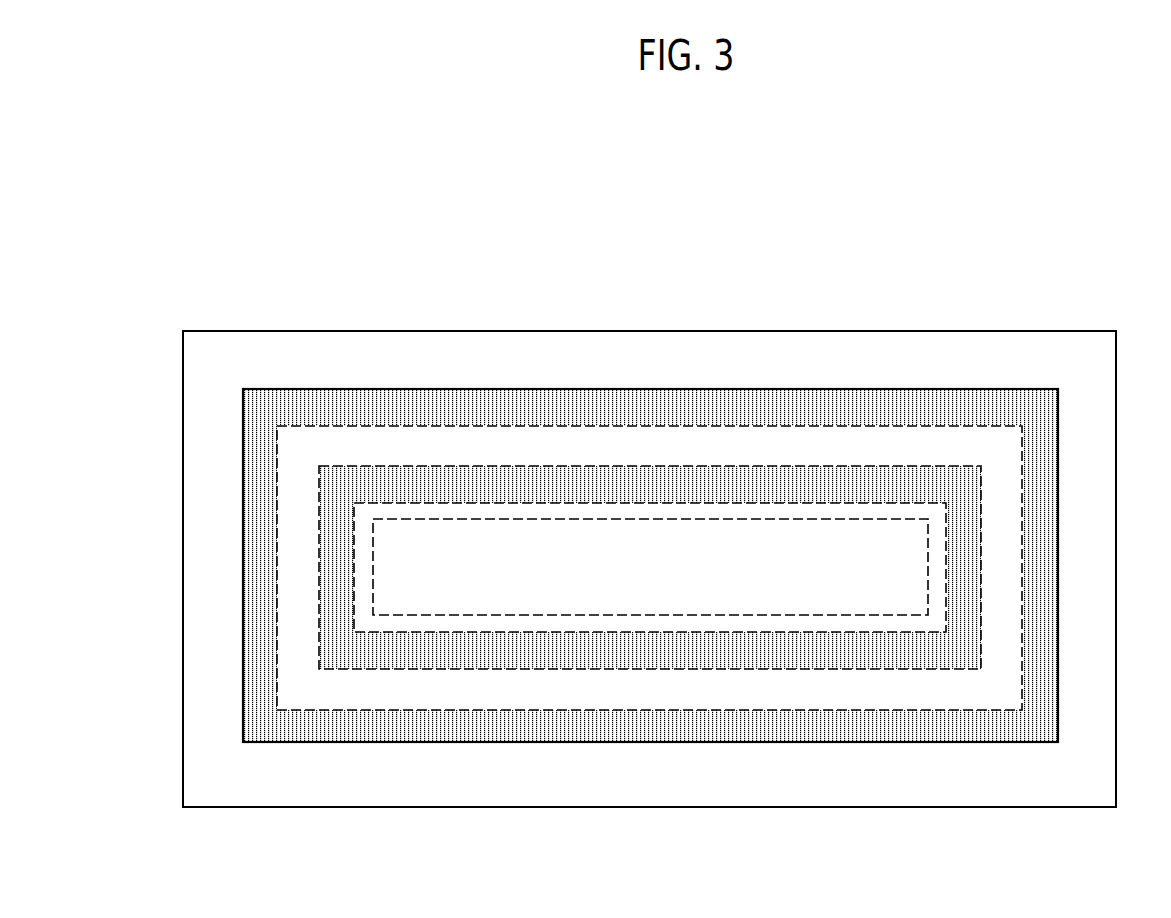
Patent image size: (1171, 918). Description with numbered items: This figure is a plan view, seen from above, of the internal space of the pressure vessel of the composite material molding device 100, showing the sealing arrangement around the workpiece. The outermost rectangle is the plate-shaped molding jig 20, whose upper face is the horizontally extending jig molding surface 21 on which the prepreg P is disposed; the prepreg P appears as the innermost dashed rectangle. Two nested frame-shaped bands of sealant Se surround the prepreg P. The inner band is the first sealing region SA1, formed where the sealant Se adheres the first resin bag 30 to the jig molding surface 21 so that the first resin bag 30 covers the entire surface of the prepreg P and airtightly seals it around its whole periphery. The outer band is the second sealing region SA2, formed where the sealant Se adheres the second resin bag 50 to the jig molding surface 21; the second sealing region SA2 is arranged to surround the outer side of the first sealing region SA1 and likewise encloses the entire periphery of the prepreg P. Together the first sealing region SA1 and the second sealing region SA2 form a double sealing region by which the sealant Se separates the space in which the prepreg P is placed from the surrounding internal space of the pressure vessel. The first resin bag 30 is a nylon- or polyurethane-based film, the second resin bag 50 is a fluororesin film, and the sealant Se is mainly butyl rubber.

The composite material molding device 100 is at (1074, 284).
The molding jig 20 is at (416, 331).
The jig molding surface 21 is at (312, 354).
The second resin bag 50 is at (650, 507).
The first resin bag 30 is at (650, 508).
The sealant Se is at (650, 507).
The prepreg P is at (773, 518).
The first sealing region SA1 is at (792, 631).
The second sealing region SA2 is at (636, 709).